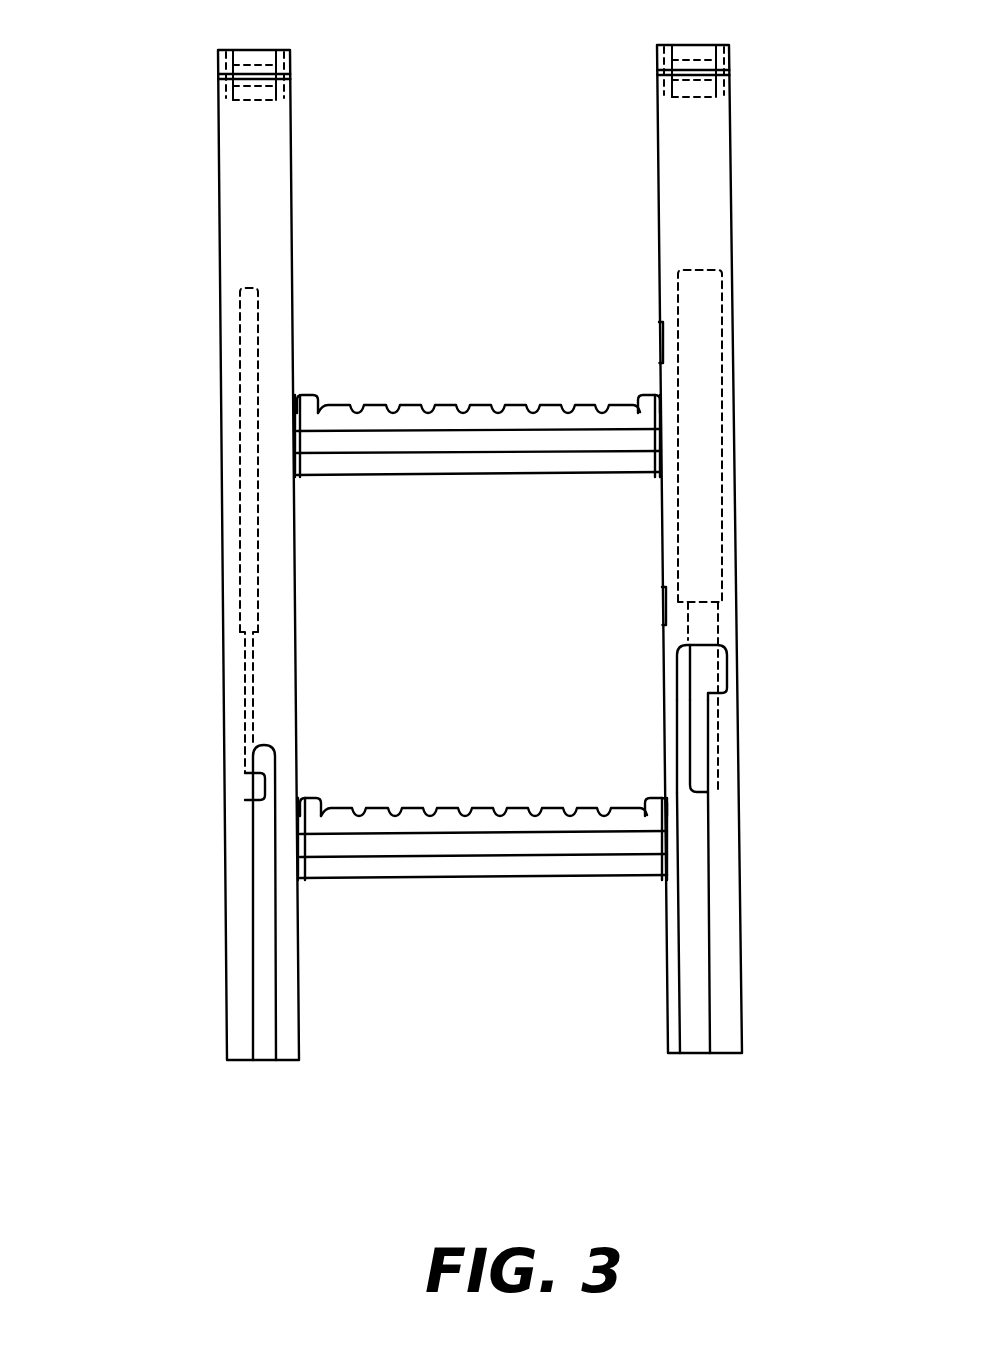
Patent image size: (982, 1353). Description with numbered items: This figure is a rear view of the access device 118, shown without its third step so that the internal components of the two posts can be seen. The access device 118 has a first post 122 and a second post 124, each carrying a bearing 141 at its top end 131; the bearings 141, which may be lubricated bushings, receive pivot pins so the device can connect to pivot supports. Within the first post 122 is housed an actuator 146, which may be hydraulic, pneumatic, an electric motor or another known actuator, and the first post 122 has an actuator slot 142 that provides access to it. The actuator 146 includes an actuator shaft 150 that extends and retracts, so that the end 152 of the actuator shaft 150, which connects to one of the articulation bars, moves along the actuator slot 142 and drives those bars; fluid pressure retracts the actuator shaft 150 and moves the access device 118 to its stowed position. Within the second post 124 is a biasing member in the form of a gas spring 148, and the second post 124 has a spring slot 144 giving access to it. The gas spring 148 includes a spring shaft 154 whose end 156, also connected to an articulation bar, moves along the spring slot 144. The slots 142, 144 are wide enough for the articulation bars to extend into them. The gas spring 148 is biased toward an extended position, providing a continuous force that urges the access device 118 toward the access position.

The access device 118 is at (203, 240).
The first post 122 is at (712, 218).
The second post 124 is at (280, 268).
The top ends 131 is at (228, 122).
The bearings 141 is at (249, 58).
The actuator slot 142 is at (693, 948).
The spring slot 144 is at (263, 970).
The actuator 146 is at (705, 493).
The gas spring 148 is at (245, 392).
The actuator shaft 150 is at (695, 667).
The end of the actuator shaft 152 is at (695, 785).
The spring shaft 154 is at (240, 700).
The end of the spring shaft 156 is at (232, 793).